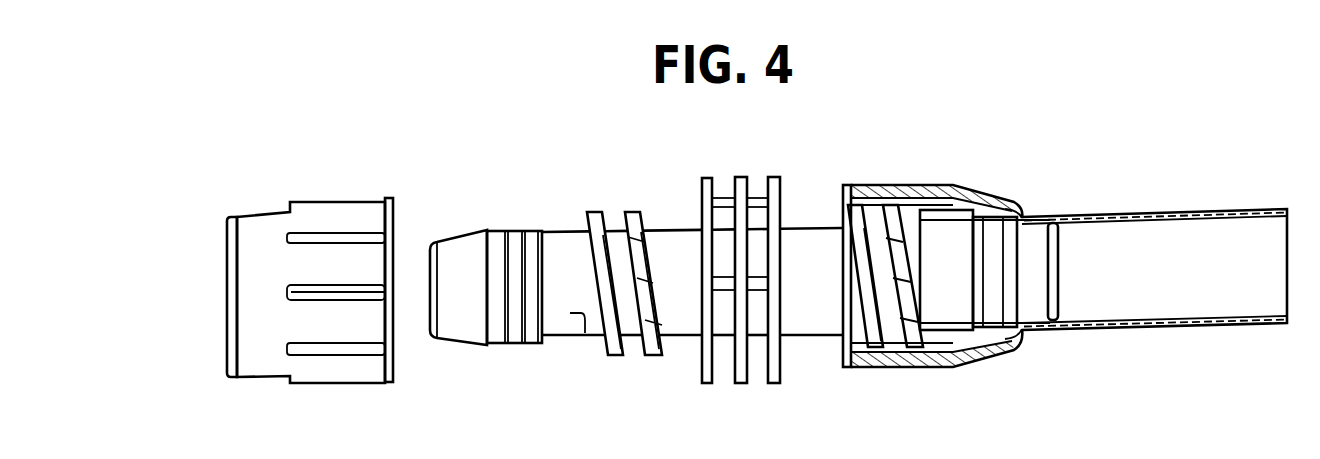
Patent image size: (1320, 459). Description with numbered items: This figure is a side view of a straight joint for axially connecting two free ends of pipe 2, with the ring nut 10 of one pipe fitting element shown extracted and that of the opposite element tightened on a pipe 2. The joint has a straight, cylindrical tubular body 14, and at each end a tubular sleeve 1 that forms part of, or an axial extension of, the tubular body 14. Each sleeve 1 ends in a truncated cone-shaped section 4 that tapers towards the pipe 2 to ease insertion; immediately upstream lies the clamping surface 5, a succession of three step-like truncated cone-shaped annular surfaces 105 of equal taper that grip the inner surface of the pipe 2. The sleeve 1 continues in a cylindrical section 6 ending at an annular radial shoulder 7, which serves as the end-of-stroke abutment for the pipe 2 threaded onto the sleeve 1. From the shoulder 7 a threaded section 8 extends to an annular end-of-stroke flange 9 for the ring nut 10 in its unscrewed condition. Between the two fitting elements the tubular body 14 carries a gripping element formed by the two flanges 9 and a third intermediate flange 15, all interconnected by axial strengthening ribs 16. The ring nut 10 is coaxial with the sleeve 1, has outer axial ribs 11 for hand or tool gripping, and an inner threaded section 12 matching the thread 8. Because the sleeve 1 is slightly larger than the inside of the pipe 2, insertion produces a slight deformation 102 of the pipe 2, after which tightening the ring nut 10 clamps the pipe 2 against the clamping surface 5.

The tubular sleeve 1 is at (548, 343).
The pipe 2 is at (1152, 211).
The tapered section 4 is at (460, 231).
The clamping surface 5 is at (495, 231).
The cylindrical section 6 is at (553, 233).
The annular radial shoulder 7 is at (575, 343).
The threaded section 8 is at (592, 212).
The end-of-stroke flange 9 is at (706, 178).
The ring nut 10 is at (268, 212).
The axial ribs 11 is at (300, 302).
The threaded section 12 is at (927, 188).
The tubular body 14 is at (804, 226).
The intermediate flange 15 is at (741, 177).
The axial strengthening ribs 16 is at (722, 198).
The deformation 102 is at (1033, 217).
The truncated cone-shaped annular surfaces 105 is at (527, 343).